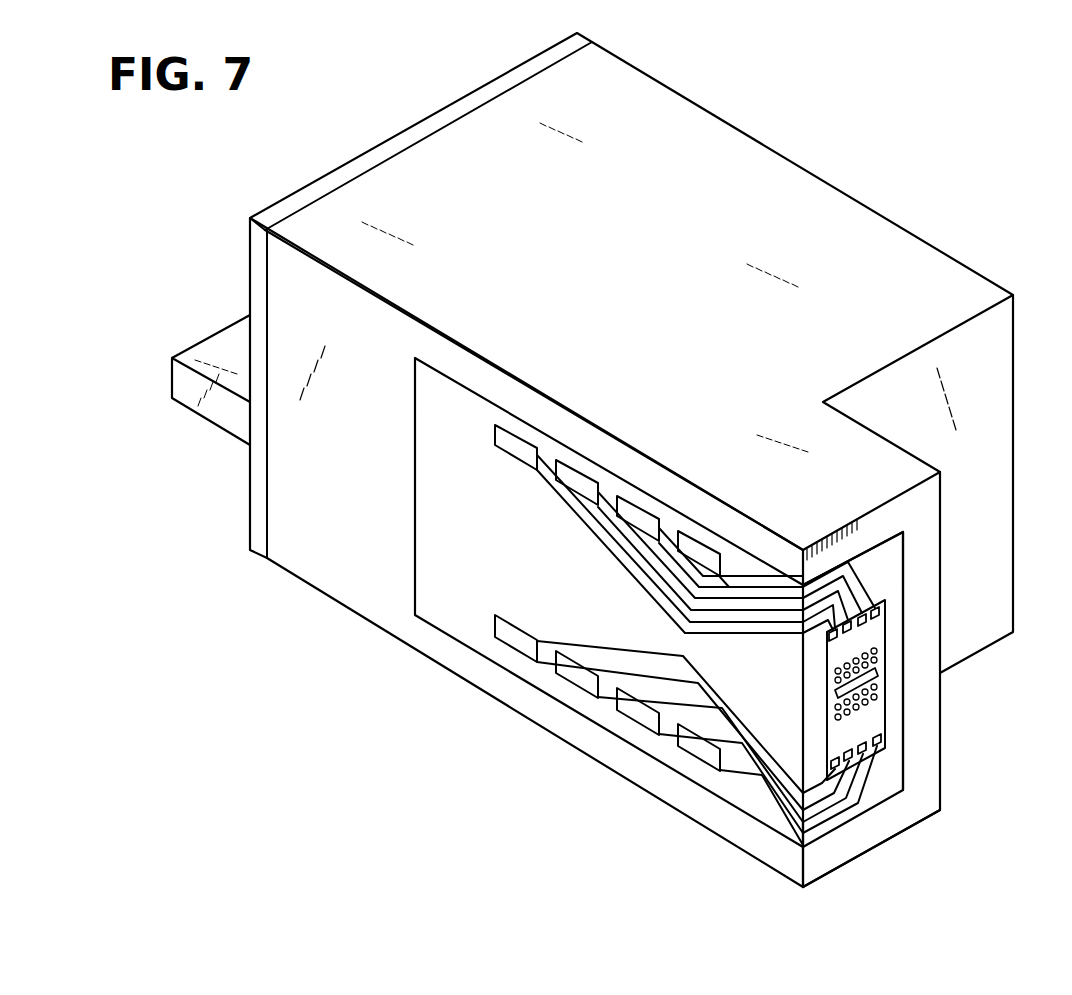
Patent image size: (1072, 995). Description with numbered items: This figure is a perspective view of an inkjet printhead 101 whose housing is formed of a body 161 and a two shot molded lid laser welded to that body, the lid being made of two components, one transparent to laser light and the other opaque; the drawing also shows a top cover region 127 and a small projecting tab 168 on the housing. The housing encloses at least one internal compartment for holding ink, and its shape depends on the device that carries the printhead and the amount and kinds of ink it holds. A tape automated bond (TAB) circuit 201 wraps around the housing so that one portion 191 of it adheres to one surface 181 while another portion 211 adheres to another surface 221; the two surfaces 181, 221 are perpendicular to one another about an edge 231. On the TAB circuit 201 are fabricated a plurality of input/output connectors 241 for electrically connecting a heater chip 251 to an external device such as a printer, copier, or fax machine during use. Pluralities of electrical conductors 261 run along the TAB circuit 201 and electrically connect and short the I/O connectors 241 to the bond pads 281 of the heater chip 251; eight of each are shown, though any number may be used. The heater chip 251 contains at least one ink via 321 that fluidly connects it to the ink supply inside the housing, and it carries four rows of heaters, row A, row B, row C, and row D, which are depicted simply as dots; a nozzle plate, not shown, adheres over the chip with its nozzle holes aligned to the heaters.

The printhead 101 is at (886, 162).
The top cover 127 is at (684, 96).
The body 161 is at (650, 283).
The tab 168 is at (213, 351).
The surface 181 is at (366, 448).
The portion 191 is at (430, 360).
The tape automated bond (TAB) circuit 201 is at (412, 505).
The portion 211 is at (912, 540).
The surface 221 is at (838, 848).
The edge 231 is at (803, 856).
The input/output (I/O) connectors 241 is at (516, 437).
The heater chip 251 is at (880, 592).
The electrical conductors 261 is at (723, 597).
The bond pads 281 is at (833, 638).
The ink via 321 is at (888, 684).
The row A of heaters A is at (883, 657).
The row B of heaters B is at (883, 663).
The row C of heaters C is at (883, 687).
The row D of heaters D is at (883, 697).